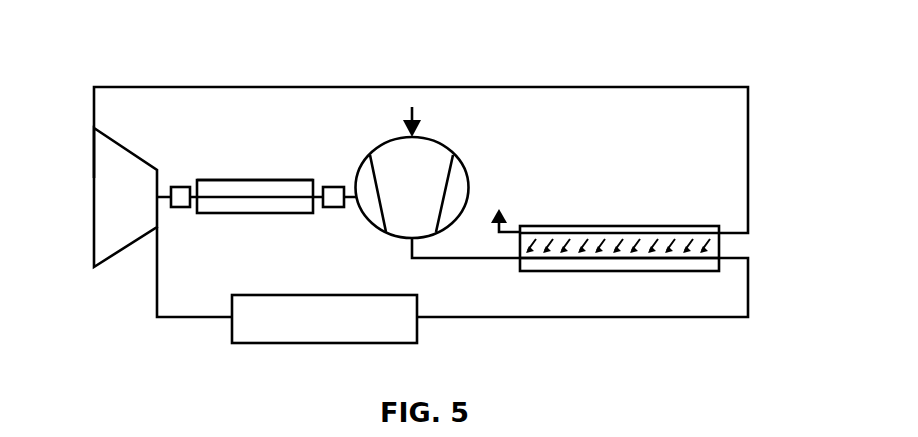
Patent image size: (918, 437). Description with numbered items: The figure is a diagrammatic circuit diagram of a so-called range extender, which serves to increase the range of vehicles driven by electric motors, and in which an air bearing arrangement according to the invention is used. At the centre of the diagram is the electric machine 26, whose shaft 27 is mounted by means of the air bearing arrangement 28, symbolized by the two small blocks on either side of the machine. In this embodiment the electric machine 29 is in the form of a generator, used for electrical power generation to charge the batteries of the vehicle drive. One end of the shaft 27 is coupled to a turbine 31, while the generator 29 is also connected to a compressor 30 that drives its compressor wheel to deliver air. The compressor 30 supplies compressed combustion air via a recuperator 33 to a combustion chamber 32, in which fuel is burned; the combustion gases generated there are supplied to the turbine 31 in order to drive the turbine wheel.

The electric machine 26 is at (258, 180).
The shaft 27 is at (285, 197).
The air bearing arrangement 28 is at (332, 210).
The electric machine 29 is at (208, 180).
The compressor 30 is at (447, 143).
The turbine 31 is at (94, 178).
The combustion chamber 32 is at (311, 343).
The recuperator 33 is at (697, 226).